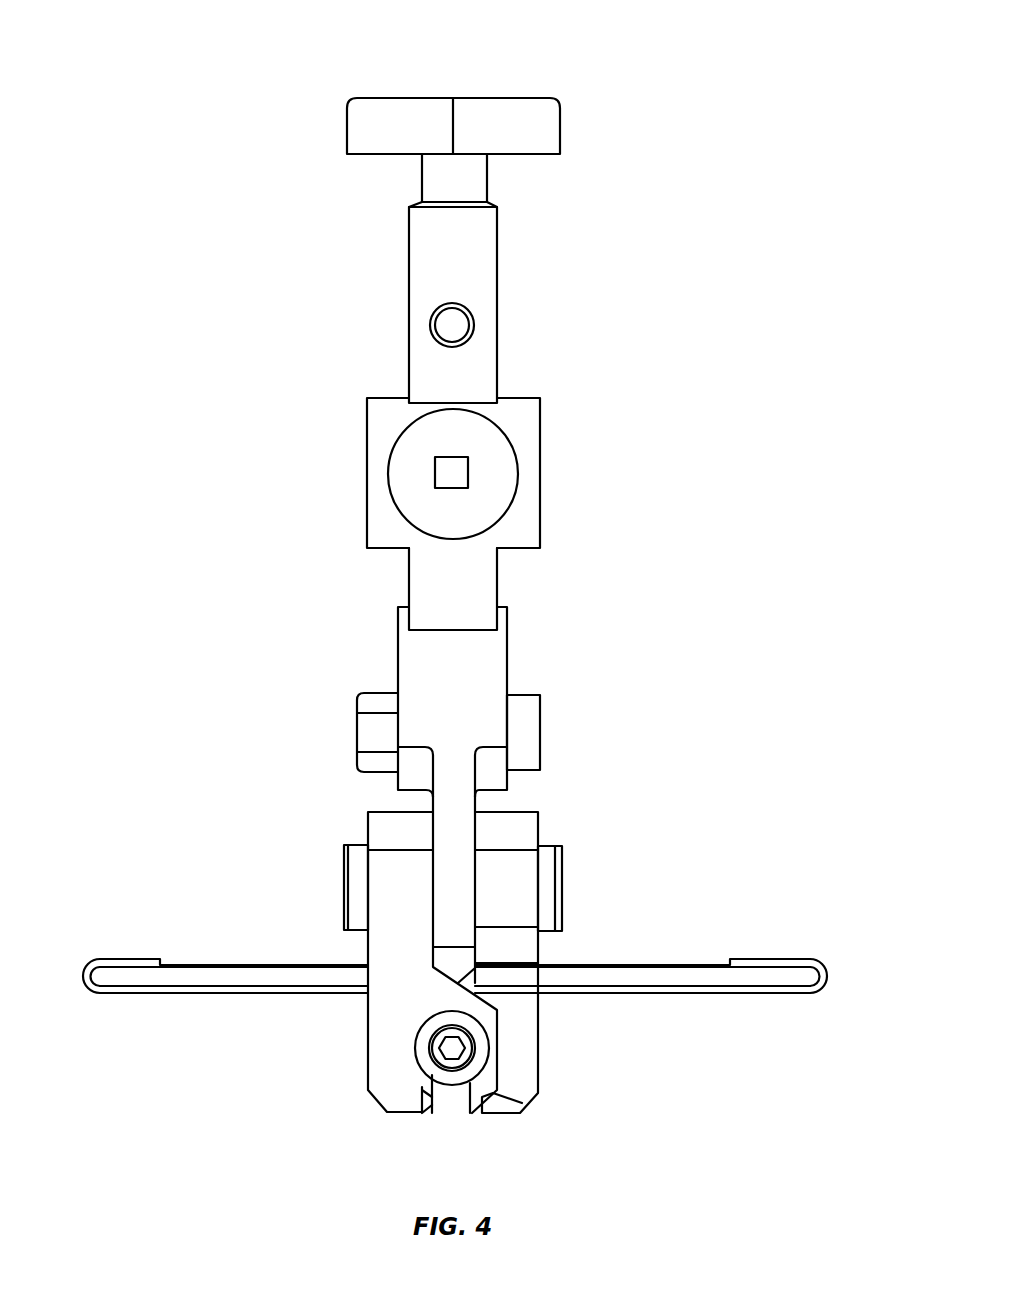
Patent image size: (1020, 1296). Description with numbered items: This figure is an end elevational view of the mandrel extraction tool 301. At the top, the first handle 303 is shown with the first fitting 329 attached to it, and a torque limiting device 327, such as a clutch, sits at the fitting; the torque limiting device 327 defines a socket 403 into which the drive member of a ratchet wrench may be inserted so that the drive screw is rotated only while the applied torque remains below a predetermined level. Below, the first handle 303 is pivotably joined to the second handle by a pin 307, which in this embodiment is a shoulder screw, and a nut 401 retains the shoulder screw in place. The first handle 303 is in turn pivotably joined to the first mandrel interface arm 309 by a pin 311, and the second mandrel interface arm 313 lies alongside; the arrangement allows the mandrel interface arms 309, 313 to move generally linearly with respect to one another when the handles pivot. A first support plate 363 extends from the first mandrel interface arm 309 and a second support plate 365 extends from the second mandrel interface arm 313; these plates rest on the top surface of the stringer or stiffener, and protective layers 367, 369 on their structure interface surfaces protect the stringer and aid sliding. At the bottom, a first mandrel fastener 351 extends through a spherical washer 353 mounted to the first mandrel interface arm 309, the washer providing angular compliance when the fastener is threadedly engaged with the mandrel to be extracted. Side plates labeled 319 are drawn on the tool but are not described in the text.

The mandrel extraction tool 301 is at (603, 84).
The first handle 303 is at (483, 251).
The first fitting 329 is at (530, 428).
The torque limiting device 327 is at (502, 472).
The socket 403 is at (452, 477).
The pin 307 is at (530, 725).
The nut 401 is at (375, 727).
The first mandrel interface arm 309 is at (383, 1012).
The pin 311 is at (552, 865).
The side plates 319 is at (550, 847).
The second mandrel interface arm 313 is at (525, 1063).
The first support plate 363 is at (257, 977).
The protective layer 367 is at (133, 990).
The second support plate 365 is at (633, 973).
The protective layer 369 is at (758, 990).
The spherical washer 353 is at (423, 1058).
The first mandrel fastener 351 is at (457, 1047).